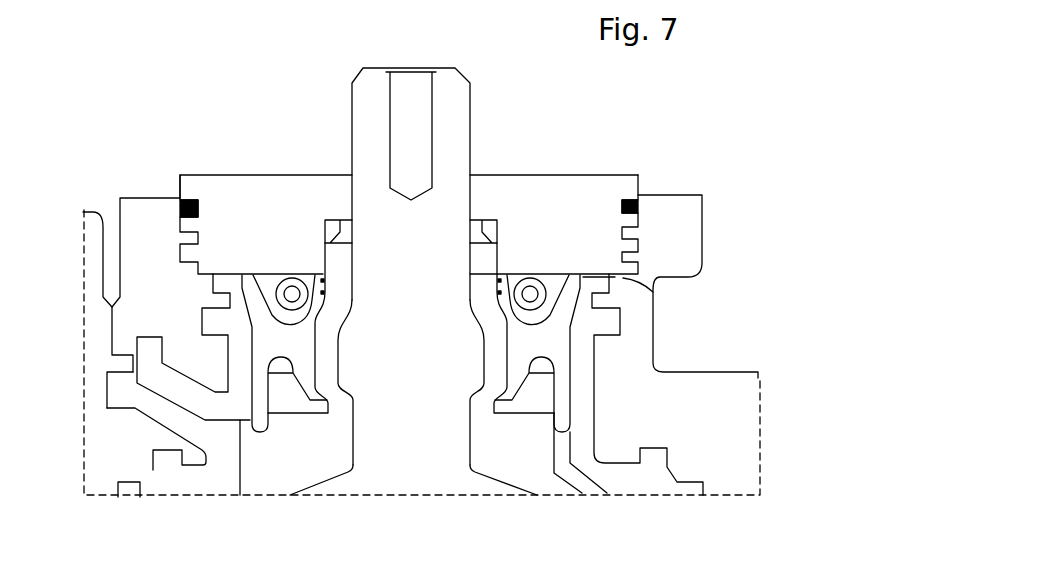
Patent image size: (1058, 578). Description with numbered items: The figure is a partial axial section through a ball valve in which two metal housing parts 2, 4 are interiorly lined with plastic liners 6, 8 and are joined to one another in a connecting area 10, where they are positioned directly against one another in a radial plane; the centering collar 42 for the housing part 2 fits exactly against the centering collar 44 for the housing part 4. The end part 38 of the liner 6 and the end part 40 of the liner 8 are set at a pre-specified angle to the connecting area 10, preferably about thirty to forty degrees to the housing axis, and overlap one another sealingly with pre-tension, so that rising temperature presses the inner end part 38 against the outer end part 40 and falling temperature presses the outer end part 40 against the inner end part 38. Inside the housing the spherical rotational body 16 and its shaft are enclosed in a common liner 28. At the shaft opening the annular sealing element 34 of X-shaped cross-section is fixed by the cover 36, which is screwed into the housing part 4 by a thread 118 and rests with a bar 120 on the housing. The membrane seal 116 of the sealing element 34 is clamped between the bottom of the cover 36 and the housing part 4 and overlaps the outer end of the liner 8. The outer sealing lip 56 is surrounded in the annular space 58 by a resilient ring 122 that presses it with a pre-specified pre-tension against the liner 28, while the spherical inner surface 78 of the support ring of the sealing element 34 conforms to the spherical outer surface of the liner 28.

The housing part 2 is at (120, 462).
The housing part 4 is at (157, 223).
The plastic liner 6 is at (204, 480).
The plastic liner 8 is at (627, 478).
The connecting area 10 is at (102, 206).
The spherical rotational body 16 is at (365, 478).
The liner 28 is at (490, 460).
The annular sealing element 34 is at (555, 343).
The cover 36 is at (216, 198).
The end part 38 is at (171, 418).
The end part 40 is at (197, 397).
The centering collar 42 is at (122, 367).
The centering collar 44 is at (125, 356).
The outer sealing lip 56 is at (318, 266).
The annular space 58 is at (268, 287).
The spherical inner surface 78 is at (318, 340).
The membrane seal 116 is at (590, 270).
The thread 118 is at (640, 230).
The bar 120 is at (655, 292).
The resilient ring 122 is at (523, 278).